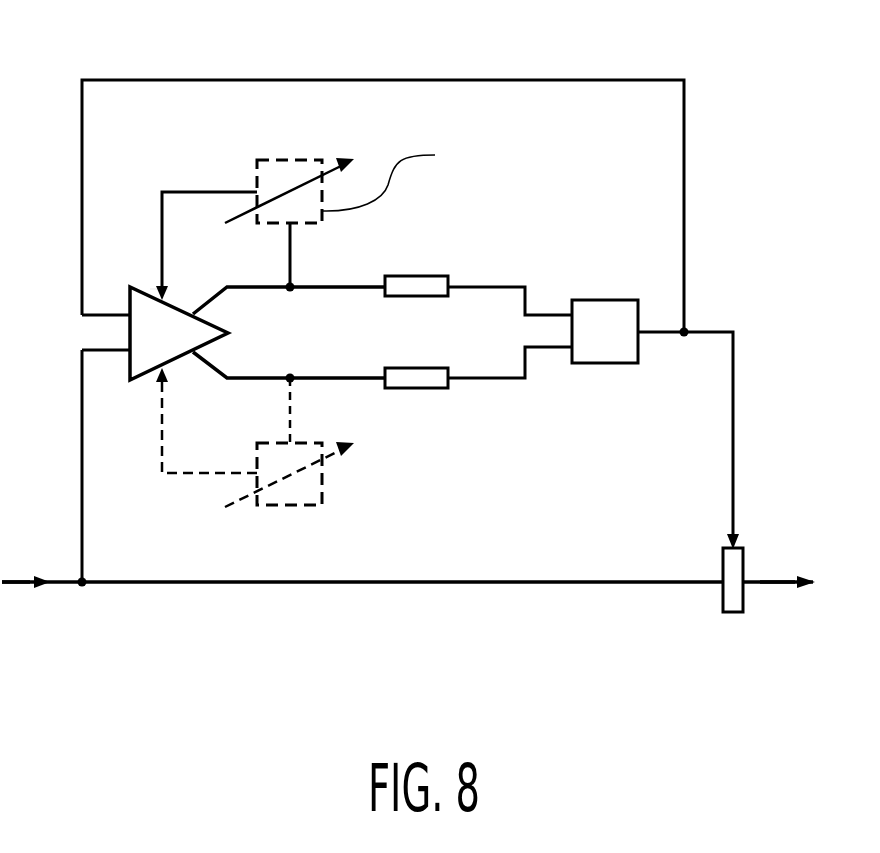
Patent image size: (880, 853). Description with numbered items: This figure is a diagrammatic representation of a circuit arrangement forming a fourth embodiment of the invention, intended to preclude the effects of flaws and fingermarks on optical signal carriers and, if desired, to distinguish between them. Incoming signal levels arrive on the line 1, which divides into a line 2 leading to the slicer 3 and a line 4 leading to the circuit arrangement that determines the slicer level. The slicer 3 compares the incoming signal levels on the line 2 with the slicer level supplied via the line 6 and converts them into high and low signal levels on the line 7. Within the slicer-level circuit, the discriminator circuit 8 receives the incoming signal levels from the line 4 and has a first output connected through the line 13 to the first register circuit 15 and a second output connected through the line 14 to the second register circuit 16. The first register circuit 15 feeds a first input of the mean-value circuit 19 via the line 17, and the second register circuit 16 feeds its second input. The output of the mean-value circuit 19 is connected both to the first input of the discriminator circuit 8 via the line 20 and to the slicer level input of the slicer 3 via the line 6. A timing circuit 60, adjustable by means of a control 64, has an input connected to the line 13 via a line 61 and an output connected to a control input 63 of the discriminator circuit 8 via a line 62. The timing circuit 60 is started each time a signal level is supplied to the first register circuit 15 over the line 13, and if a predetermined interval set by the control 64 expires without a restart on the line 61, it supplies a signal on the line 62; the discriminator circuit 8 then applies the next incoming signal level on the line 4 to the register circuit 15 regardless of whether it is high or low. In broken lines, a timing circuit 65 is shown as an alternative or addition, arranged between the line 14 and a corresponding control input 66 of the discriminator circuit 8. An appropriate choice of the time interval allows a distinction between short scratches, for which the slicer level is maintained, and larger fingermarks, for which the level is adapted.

The line 1 is at (58, 585).
The line 2 is at (492, 585).
The slicer 3 is at (732, 614).
The line 4 is at (82, 462).
The line 6 is at (733, 420).
The line 7 is at (775, 585).
The discriminator circuit 8 is at (130, 332).
The line 13 is at (218, 292).
The line 14 is at (200, 355).
The first register circuit 15 is at (435, 275).
The second register circuit 16 is at (433, 388).
The line 17 is at (493, 285).
The mean-value circuit 19 is at (602, 300).
The line 20 is at (481, 80).
The timing circuit 60 is at (288, 160).
The line 61 is at (290, 252).
The line 62 is at (200, 192).
The control input 63 is at (157, 293).
The control 64 is at (329, 158).
The timing circuit 65 is at (330, 463).
The control input 66 is at (160, 368).